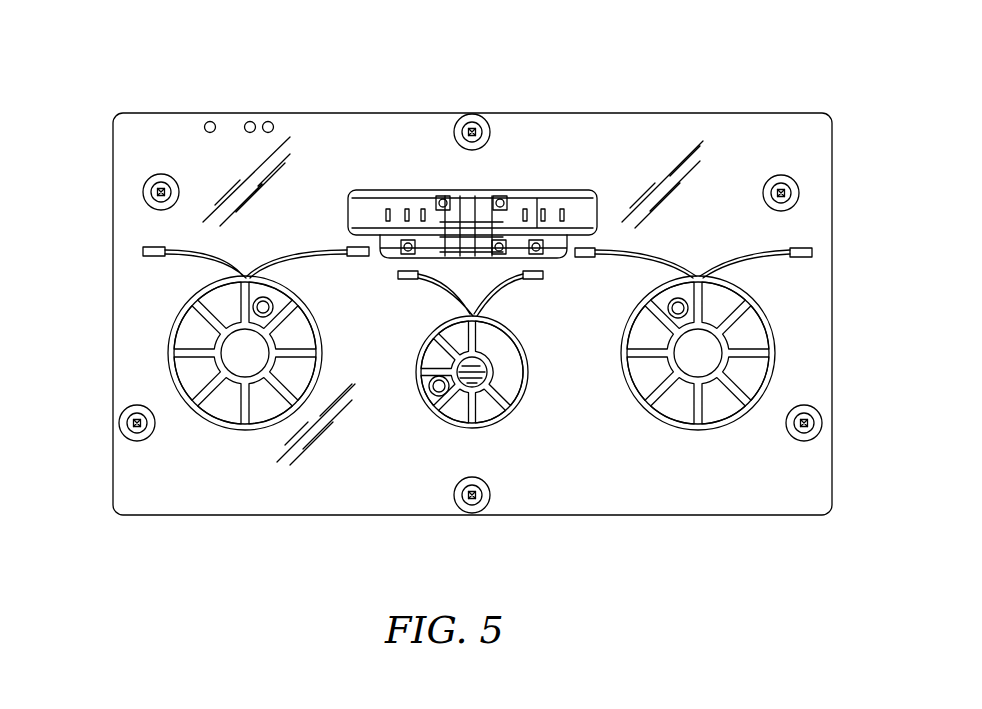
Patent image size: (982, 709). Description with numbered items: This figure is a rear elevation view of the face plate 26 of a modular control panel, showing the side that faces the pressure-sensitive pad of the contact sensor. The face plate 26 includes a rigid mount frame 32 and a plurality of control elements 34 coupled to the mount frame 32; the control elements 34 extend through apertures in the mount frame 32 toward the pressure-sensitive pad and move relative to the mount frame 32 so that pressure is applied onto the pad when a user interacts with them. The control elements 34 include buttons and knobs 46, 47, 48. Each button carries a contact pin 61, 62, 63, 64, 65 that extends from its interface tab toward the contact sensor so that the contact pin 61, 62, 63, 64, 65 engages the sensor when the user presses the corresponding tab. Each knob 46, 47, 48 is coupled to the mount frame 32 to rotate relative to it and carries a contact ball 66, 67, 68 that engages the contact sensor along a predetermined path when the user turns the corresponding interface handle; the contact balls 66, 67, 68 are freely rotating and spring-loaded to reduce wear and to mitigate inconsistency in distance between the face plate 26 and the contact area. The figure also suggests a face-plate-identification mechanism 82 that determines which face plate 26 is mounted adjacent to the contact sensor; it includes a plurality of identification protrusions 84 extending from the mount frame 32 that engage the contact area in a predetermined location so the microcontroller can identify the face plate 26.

The face plate 26 is at (103, 87).
The mount frame 32 is at (783, 160).
The control elements 34 is at (558, 175).
The knob 46 is at (704, 436).
The knob 47 is at (498, 430).
The knob 48 is at (233, 436).
The contact pin 61 is at (548, 247).
The contact pin 62 is at (398, 247).
The contact pin 63 is at (501, 192).
The contact pin 64 is at (443, 192).
The contact pin 65 is at (499, 257).
The contact ball 66 is at (668, 292).
The contact ball 67 is at (423, 392).
The contact ball 68 is at (280, 287).
The face-plate-identification mechanism 82 is at (218, 105).
The identification protrusions 84 is at (278, 127).